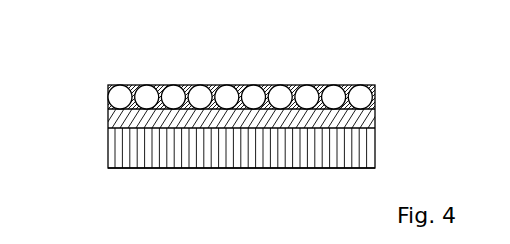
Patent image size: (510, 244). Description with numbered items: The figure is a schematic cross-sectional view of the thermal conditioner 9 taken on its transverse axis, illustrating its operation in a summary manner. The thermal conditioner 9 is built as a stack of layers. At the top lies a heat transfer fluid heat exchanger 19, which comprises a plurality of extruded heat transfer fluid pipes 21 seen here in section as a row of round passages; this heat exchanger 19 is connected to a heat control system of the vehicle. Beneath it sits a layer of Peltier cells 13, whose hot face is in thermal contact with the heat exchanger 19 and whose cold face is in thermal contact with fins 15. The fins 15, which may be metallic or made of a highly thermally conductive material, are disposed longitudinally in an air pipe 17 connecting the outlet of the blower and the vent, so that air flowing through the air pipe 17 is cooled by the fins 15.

The thermal conditioner 9 is at (60, 97).
The Peltier cells 13 is at (376, 118).
The fins 15 is at (278, 168).
The air pipe 17 is at (376, 145).
The heat transfer fluid heat exchanger 19 is at (378, 100).
The extruded heat transfer fluid pipes 21 is at (227, 85).